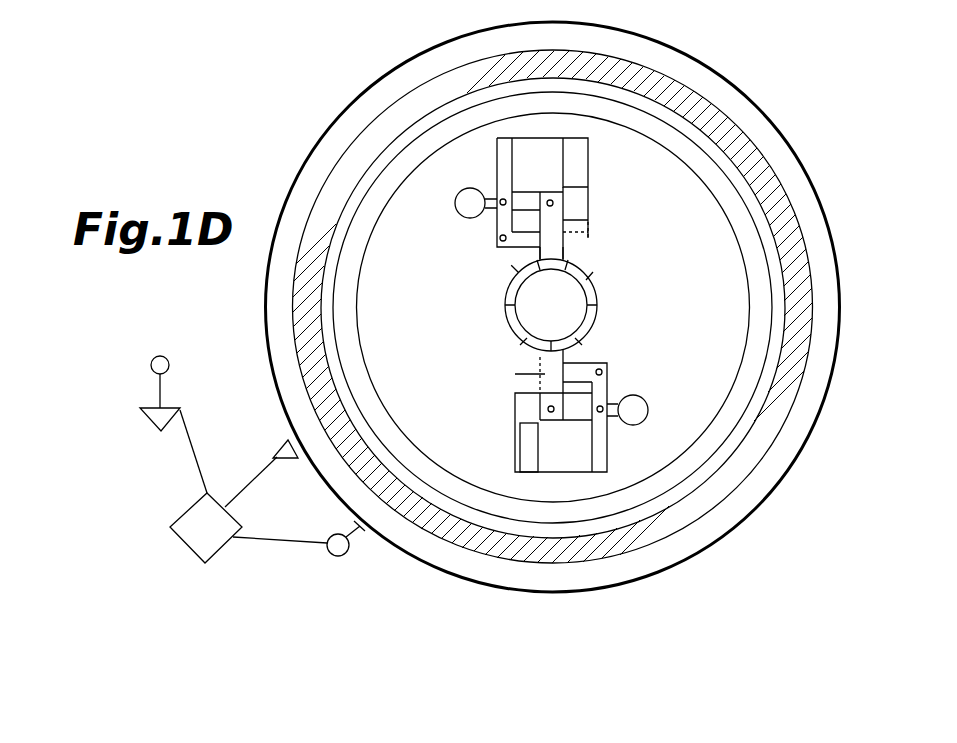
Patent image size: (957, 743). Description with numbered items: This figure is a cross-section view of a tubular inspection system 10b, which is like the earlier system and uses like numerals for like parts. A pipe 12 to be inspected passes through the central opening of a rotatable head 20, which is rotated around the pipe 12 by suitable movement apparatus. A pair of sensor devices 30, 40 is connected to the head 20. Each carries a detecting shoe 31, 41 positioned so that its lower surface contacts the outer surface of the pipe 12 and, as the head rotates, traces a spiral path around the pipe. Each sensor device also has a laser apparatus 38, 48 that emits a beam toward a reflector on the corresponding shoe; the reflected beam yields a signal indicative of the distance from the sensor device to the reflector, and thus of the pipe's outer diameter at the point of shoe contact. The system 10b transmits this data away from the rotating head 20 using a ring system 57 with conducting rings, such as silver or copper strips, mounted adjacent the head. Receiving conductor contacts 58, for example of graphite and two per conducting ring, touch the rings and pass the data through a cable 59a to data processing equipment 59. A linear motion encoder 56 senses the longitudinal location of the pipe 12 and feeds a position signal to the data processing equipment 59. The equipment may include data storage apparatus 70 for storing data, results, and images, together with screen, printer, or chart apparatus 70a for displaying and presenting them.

The system 10b is at (266, 172).
The rotatable head 20 is at (484, 76).
The pipe 12 is at (595, 297).
The sensor device 30 is at (592, 160).
The laser apparatus 38 is at (573, 170).
The detecting shoe 31 is at (548, 252).
The detecting shoe 41 is at (548, 365).
The sensor device 40 is at (520, 453).
The laser apparatus 48 is at (530, 452).
The ring system 57 is at (265, 335).
The screen, printer, and/or chart apparatus 70a is at (152, 360).
The data storage apparatus 70 is at (158, 406).
The receiving conductor contacts 58 is at (275, 447).
The data processing equipment 59 is at (195, 525).
The cable 59a is at (255, 482).
The linear motion encoder 56 is at (335, 556).